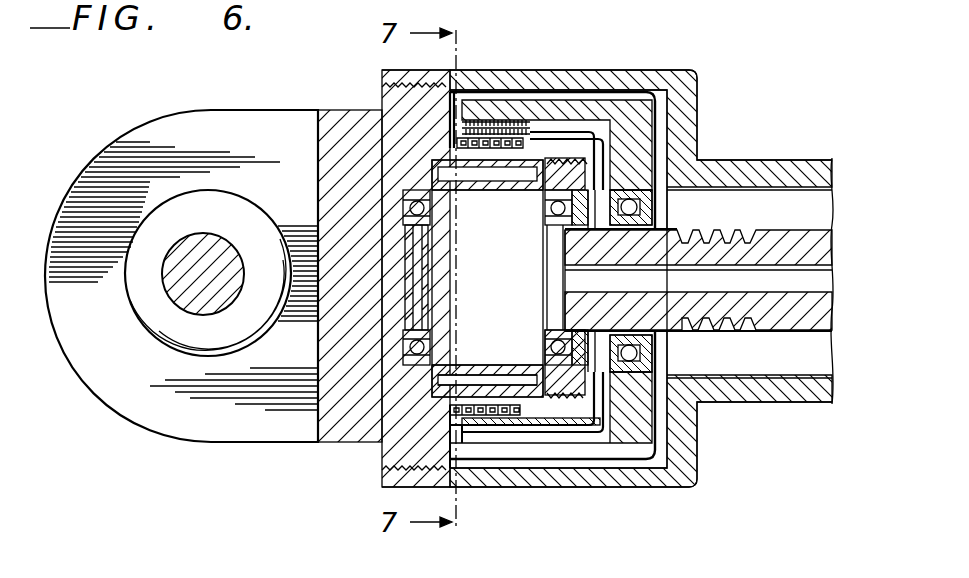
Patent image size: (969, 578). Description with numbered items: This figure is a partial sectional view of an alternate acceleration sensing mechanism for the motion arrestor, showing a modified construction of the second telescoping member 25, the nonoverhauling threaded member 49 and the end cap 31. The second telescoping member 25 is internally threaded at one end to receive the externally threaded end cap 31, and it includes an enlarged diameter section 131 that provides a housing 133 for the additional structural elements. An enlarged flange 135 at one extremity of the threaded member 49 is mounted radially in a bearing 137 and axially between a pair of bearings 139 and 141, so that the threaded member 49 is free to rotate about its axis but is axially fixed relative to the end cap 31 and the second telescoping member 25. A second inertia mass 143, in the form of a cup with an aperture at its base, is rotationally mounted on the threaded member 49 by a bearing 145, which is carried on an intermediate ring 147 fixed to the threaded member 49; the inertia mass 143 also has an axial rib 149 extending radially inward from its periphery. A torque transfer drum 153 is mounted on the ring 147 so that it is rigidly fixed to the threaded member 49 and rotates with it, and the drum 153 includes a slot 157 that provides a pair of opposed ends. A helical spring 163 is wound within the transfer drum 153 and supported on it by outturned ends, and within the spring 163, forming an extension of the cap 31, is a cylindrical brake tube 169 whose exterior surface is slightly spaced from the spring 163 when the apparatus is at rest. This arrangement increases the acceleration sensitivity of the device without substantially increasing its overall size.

The second telescoping member 25 is at (692, 101).
The end cap 31 is at (394, 97).
The nonoverhauling threaded member 49 is at (745, 250).
The enlarged diameter section 131 is at (583, 80).
The housing 133 is at (628, 92).
The enlarged flange 135 is at (500, 283).
The bearing 137 is at (455, 380).
The bearing 139 is at (412, 346).
The bearing 141 is at (553, 348).
The second inertia mass 143 is at (640, 432).
The bearing 145 is at (636, 207).
The intermediate ring 147 is at (655, 341).
The axial rib 149 is at (474, 118).
The torque transfer drum 153 is at (545, 428).
The slot 157 is at (520, 134).
The helical spring 163 is at (460, 412).
The cylindrical brake tube 169 is at (518, 166).